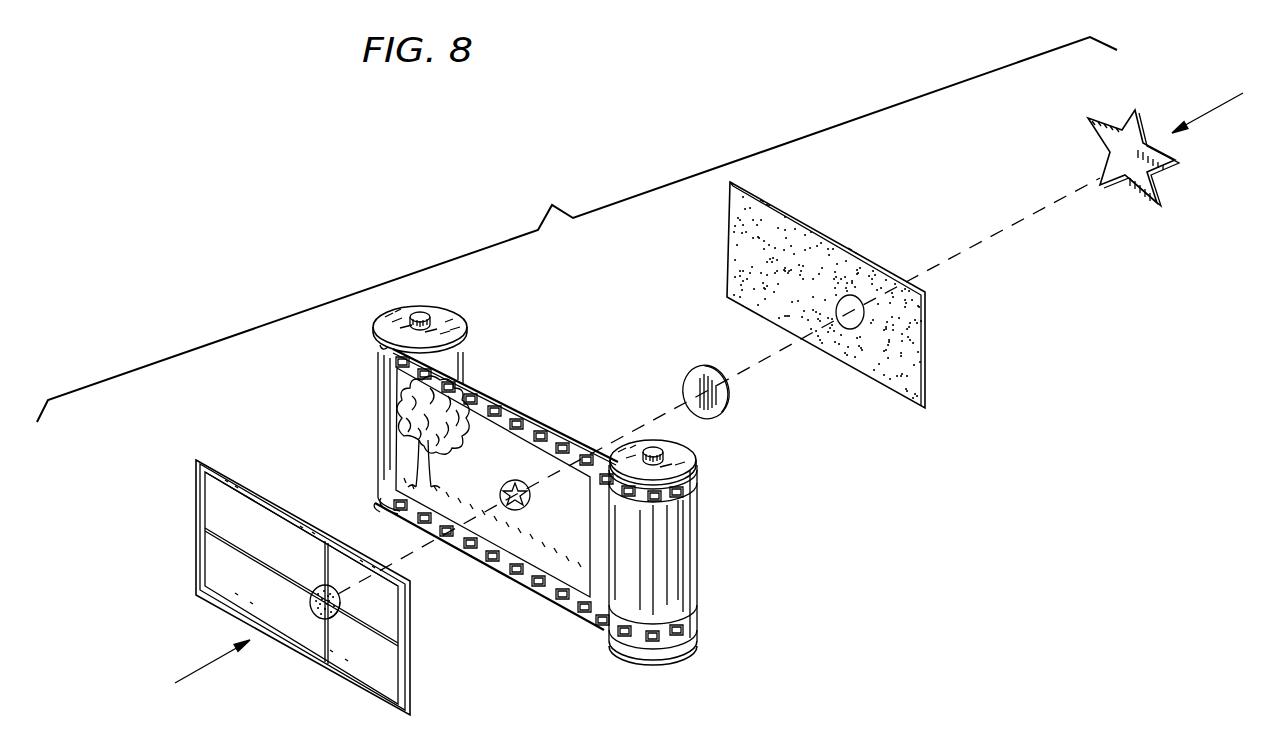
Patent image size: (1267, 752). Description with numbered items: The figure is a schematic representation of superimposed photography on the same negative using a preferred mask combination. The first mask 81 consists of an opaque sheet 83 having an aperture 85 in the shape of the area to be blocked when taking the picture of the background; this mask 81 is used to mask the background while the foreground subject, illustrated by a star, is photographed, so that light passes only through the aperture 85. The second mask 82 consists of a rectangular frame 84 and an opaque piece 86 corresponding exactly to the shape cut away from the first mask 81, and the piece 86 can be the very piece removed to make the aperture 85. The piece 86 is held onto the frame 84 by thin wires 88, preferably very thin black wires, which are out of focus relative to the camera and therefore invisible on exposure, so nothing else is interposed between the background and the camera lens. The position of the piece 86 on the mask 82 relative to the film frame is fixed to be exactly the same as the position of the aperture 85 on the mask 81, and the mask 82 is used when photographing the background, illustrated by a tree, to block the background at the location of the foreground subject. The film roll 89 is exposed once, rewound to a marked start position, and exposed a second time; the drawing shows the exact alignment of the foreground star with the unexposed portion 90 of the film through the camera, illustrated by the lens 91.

The first mask 81 is at (925, 368).
The second mask 82 is at (193, 580).
The opaque sheet 83 is at (885, 368).
The rectangular frame 84 is at (238, 485).
The aperture 85 is at (863, 312).
The opaque piece 86 is at (315, 613).
The thin wires 88 is at (380, 633).
The film roll 89 is at (613, 630).
The unexposed portion of the film 90 is at (515, 511).
The lens 91 is at (730, 405).